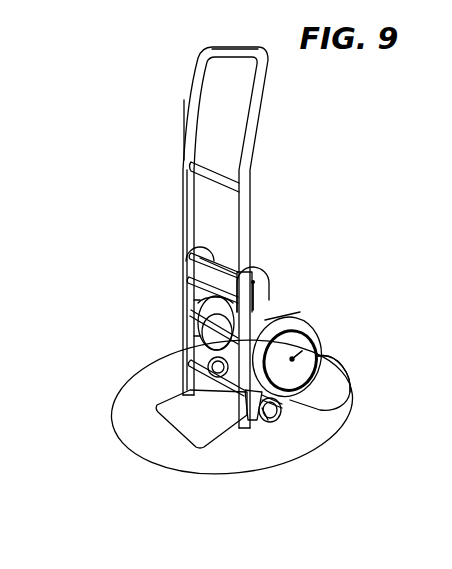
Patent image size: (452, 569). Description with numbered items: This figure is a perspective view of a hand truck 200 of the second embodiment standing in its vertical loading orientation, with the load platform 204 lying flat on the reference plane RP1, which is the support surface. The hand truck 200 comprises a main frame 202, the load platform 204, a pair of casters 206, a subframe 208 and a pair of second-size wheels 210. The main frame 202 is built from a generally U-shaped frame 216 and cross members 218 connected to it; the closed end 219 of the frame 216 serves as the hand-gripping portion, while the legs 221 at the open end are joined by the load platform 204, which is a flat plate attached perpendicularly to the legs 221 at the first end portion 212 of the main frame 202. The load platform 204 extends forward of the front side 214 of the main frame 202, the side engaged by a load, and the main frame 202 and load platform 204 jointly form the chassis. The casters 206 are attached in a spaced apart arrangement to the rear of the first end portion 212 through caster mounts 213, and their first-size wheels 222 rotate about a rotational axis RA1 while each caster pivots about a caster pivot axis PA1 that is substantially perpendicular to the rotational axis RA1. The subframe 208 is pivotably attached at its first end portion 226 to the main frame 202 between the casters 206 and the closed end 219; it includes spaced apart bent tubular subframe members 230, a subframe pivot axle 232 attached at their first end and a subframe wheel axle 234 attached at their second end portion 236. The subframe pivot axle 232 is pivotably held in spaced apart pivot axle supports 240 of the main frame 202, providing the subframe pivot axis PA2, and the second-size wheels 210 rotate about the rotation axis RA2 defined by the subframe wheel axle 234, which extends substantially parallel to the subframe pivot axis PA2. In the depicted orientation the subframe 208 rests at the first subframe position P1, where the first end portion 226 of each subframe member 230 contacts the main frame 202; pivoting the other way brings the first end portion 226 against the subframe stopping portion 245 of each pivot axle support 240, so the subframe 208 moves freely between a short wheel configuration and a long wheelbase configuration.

The hand truck 200 is at (262, 188).
The main frame 202 is at (266, 78).
The load platform 204 is at (182, 418).
The casters 206 is at (284, 408).
The subframe 208 is at (284, 312).
The second-size wheels 210 is at (318, 373).
The first end portion 212 is at (140, 346).
The caster mounts 213 is at (279, 404).
The front side 214 is at (180, 193).
The U-shaped frame 216 is at (187, 88).
The cross members 218 is at (184, 167).
The closed end 219 is at (231, 47).
The legs 221 is at (218, 378).
The first-size wheels 222 is at (283, 402).
The first end portion of the subframe 226 is at (184, 290).
The subframe members 230 is at (184, 295).
The subframe pivot axle 232 is at (225, 252).
The subframe wheel axle 234 is at (185, 338).
The second end portion of the subframe members 236 is at (184, 298).
The pivot axle supports 240 is at (186, 258).
The subframe stopping portion 245 is at (264, 268).
The caster pivot axis PA1 is at (228, 392).
The subframe pivot axis PA2 is at (264, 284).
The first subframe position P1 is at (314, 312).
The rotational axis of the first-size wheels RA1 is at (280, 406).
The rotation axis of the second-size wheels RA2 is at (320, 332).
The reference plane RP1 is at (350, 378).